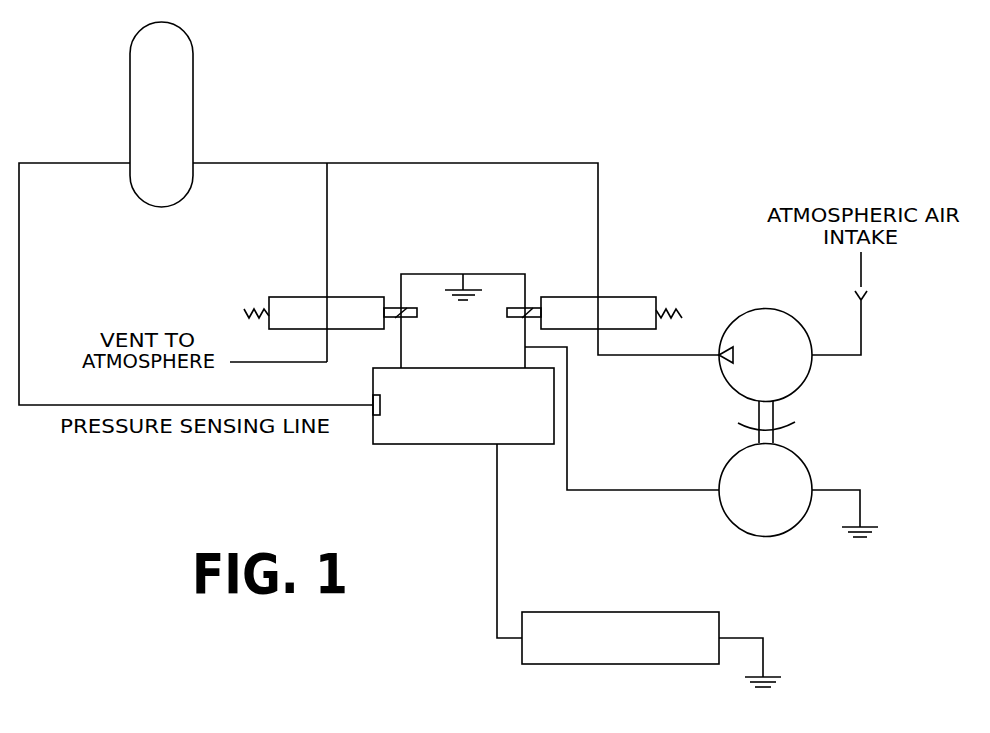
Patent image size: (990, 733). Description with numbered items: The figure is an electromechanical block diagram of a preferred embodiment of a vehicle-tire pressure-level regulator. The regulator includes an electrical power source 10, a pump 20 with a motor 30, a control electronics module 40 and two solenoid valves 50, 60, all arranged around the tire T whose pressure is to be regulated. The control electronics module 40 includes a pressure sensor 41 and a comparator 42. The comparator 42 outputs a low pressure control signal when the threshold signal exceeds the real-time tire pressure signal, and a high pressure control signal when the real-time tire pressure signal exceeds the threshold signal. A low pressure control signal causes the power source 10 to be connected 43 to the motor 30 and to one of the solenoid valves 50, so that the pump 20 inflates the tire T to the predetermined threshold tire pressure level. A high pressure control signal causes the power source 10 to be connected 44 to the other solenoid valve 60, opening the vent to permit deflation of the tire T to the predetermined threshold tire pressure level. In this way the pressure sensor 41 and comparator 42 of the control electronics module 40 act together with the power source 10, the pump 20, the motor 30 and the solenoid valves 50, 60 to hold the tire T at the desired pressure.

The tire T is at (193, 65).
The electrical power source 10 is at (592, 664).
The pump 20 is at (754, 311).
The motor 30 is at (778, 534).
The control electronics module 40 is at (447, 445).
The pressure sensor 41 is at (373, 413).
The comparator 42 is at (517, 435).
The connection 43 is at (525, 348).
The connection 44 is at (402, 347).
The solenoid valve 50 is at (574, 296).
The solenoid valve 60 is at (295, 296).